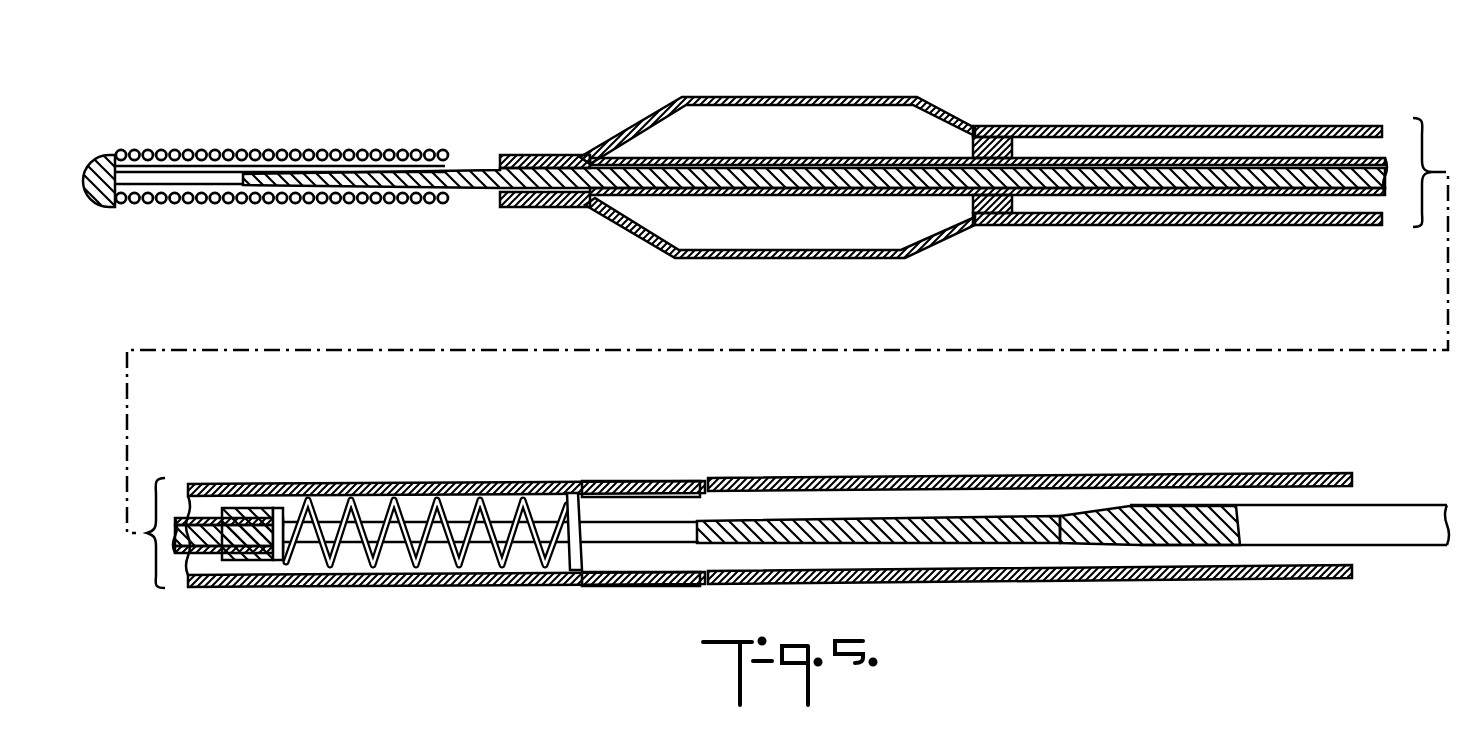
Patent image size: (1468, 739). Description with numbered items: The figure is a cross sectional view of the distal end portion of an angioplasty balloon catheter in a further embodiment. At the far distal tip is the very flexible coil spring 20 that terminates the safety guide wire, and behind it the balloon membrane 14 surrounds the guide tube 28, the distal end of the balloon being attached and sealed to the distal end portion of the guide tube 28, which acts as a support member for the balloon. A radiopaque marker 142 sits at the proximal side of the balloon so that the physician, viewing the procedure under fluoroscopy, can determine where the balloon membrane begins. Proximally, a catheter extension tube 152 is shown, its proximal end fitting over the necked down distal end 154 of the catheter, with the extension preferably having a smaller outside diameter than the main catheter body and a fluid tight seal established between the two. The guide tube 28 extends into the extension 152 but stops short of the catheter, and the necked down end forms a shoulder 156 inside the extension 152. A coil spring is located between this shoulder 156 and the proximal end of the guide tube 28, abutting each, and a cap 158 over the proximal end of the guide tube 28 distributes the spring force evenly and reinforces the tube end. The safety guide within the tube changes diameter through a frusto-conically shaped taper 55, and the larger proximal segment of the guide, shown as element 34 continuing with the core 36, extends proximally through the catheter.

The balloon membrane 14 is at (738, 97).
The coil spring 20 is at (285, 150).
The guide tube 28 is at (1292, 190).
The rod 34 is at (1403, 540).
The core wire 36 is at (1002, 540).
The frusto-conically shaped taper 55 is at (1123, 547).
The radiopaque marker 142 is at (1000, 214).
The catheter extension tube 152 is at (1328, 126).
The necked down distal end 154 is at (659, 508).
The shoulder 156 is at (573, 570).
The cap 158 is at (242, 560).